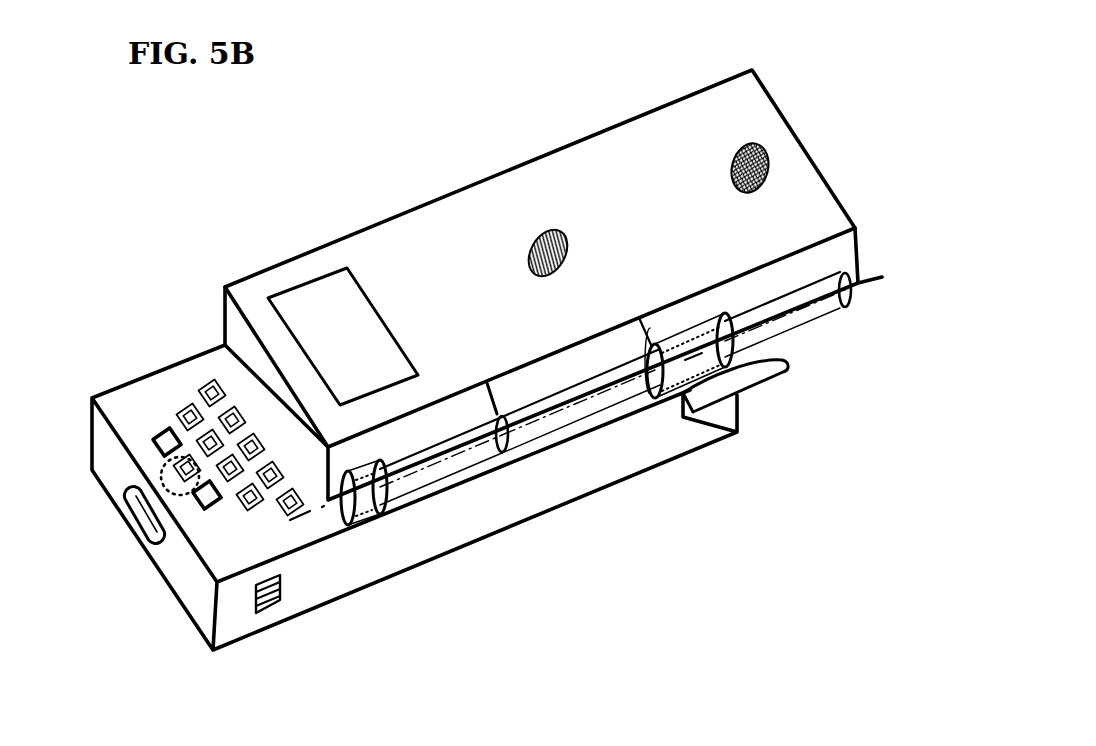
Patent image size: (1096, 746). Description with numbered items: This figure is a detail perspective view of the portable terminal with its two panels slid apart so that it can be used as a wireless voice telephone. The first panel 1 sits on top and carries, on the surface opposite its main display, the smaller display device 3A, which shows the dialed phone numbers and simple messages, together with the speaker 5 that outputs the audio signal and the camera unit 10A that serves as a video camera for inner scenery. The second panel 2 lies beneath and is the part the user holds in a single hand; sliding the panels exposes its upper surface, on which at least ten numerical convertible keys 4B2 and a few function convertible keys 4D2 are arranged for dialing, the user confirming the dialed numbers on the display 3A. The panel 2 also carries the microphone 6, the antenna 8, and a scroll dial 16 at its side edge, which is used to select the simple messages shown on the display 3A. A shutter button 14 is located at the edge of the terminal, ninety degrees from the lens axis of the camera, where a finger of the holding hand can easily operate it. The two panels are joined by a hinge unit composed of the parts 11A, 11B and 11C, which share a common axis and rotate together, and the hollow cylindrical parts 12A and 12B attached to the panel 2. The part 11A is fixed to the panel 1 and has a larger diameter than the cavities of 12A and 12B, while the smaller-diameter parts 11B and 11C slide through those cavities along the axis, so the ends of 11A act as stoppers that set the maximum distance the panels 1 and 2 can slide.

The first panel 1 is at (722, 132).
The second panel 2 is at (543, 500).
The display device 3A is at (365, 313).
The numerical convertible keys 4B2 is at (190, 403).
The function convertible keys 4D2 is at (203, 498).
The speaker 5 is at (757, 148).
The microphone 6 is at (162, 470).
The antenna 8 is at (753, 375).
The camera unit 10A is at (537, 232).
The hinge unit part 11A is at (586, 387).
The hinge unit part 11B is at (820, 293).
The hinge unit part 11C is at (463, 447).
The hinge unit part 12A is at (697, 365).
The hinge unit part 12B is at (362, 495).
The shutter button 14 is at (258, 615).
The scroll dial 16 is at (130, 510).